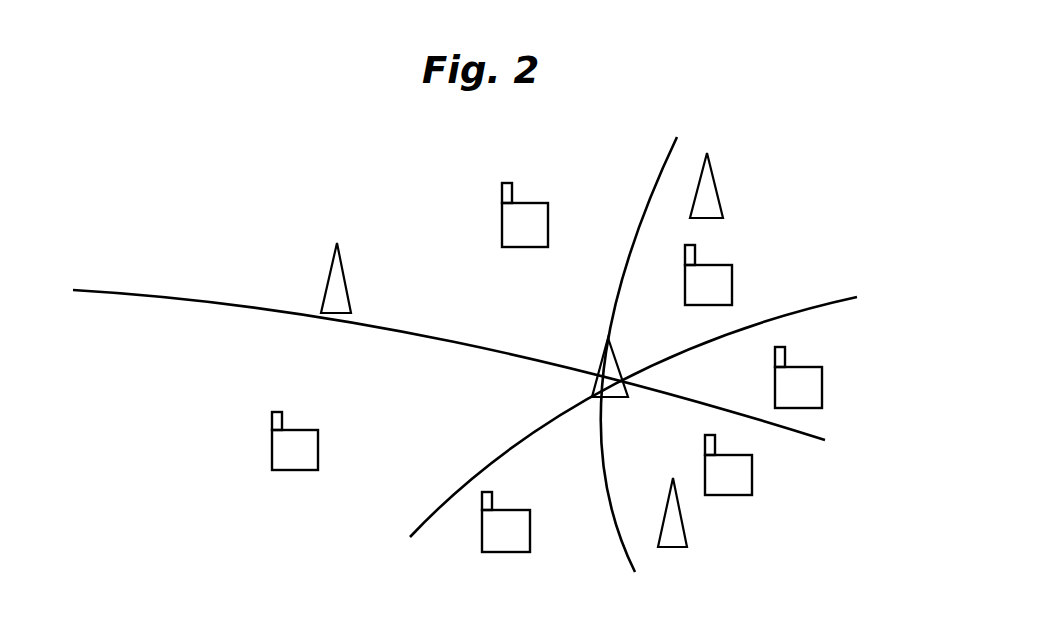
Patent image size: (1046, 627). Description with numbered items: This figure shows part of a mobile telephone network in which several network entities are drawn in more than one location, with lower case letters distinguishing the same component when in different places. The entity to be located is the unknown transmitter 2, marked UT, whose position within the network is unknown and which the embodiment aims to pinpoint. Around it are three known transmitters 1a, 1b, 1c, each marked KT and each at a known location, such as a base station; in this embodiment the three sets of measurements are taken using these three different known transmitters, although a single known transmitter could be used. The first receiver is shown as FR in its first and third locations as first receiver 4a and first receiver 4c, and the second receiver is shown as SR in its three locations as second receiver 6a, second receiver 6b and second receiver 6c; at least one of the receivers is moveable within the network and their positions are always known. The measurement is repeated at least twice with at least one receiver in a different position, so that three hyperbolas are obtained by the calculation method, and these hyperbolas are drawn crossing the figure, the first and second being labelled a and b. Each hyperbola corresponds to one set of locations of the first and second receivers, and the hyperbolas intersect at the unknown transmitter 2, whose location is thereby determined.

The known transmitter 1a is at (333, 263).
The known transmitter 1b is at (713, 168).
The known transmitter 1c is at (677, 548).
The unknown transmitter 2 is at (600, 362).
The first receiver 4a is at (292, 472).
The first receiver 4c is at (733, 288).
The second receiver 6a is at (525, 202).
The second receiver 6b is at (753, 473).
The second receiver 6c is at (823, 380).
The first location a is at (190, 303).
The second location b is at (637, 233).